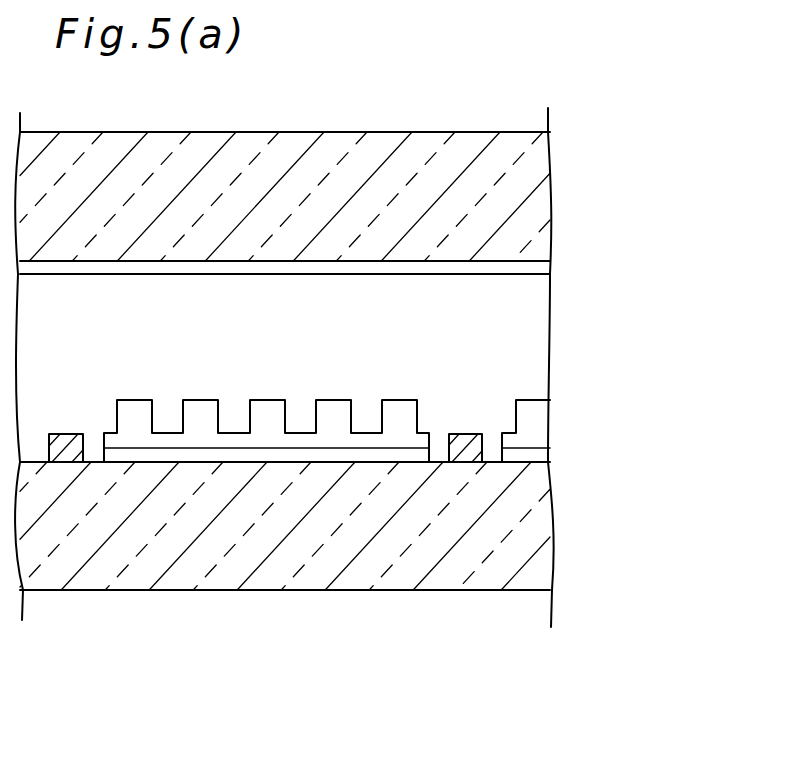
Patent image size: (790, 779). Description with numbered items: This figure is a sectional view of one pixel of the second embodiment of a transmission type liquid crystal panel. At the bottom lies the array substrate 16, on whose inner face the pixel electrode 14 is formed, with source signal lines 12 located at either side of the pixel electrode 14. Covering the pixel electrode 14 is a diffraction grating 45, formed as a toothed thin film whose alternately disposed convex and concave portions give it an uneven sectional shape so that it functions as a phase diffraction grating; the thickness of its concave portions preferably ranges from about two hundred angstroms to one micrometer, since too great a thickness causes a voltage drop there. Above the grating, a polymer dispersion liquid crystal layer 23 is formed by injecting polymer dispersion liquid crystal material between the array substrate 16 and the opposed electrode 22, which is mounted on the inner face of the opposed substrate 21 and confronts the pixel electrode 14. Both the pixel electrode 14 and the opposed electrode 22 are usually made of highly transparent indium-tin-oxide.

The opposed substrate 21 is at (543, 190).
The opposed electrode 22 is at (545, 268).
The polymer dispersion liquid crystal layer 23 is at (540, 342).
The diffraction grating 45 is at (536, 420).
The pixel electrode 14 is at (536, 460).
The array substrate 16 is at (540, 540).
The source signal line 12 is at (463, 458).